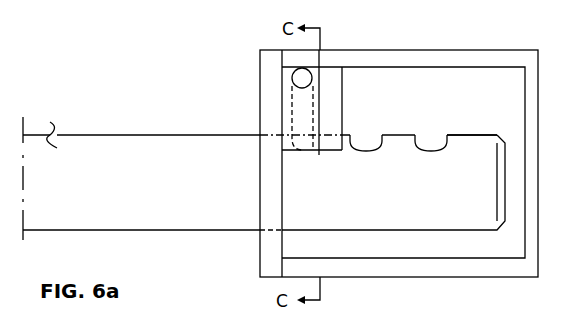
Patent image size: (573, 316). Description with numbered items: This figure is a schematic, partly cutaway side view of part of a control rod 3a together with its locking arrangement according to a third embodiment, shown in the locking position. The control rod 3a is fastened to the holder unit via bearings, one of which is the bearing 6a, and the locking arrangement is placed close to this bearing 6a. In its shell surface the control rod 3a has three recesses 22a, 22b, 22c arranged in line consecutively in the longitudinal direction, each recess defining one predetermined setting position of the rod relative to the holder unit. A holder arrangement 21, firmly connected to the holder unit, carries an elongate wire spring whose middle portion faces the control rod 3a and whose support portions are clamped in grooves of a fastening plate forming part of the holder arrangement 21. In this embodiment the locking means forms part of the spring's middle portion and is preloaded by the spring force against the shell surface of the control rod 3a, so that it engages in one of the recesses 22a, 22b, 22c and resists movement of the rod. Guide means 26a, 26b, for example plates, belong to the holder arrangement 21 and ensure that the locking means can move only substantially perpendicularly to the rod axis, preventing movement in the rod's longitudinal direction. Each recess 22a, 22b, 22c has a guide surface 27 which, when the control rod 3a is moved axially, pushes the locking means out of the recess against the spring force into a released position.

The control rod 3a is at (264, 167).
The holder arrangement 21 is at (400, 50).
The recess 22a is at (318, 152).
The recess 22b is at (382, 147).
The recess 22c is at (447, 150).
The guide means 26a is at (272, 107).
The guide means 26b is at (341, 82).
The guide surface 27 is at (407, 147).
The bearing 6a is at (267, 237).